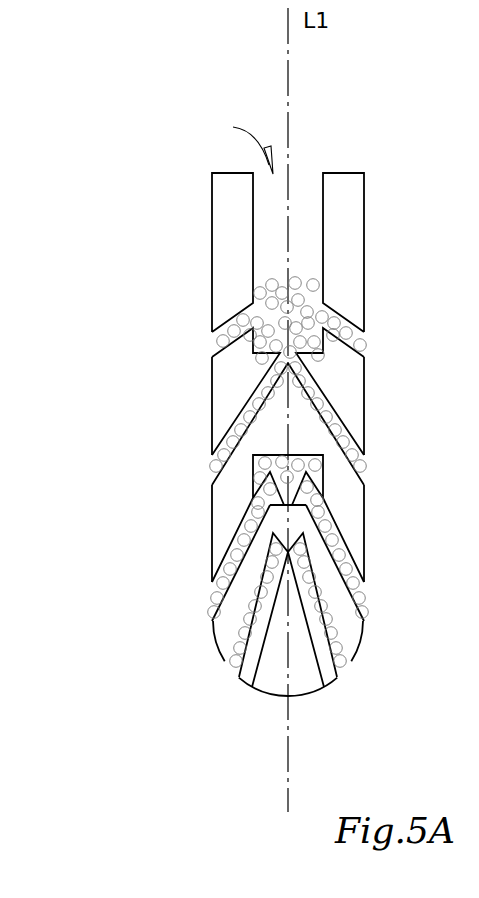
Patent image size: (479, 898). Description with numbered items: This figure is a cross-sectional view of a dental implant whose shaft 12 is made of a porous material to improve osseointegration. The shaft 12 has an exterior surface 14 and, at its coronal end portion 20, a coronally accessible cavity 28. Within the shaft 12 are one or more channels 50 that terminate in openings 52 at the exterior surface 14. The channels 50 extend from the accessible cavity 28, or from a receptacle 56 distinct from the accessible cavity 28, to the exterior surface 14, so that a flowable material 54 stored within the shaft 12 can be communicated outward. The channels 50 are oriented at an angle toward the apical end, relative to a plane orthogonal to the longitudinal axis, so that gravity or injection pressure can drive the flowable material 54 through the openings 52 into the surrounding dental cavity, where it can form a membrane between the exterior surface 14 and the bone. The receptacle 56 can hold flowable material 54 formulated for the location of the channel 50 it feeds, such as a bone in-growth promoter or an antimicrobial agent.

The shaft 12 is at (110, 127).
The exterior surface 14 is at (210, 253).
The coronal end portion 20 is at (353, 225).
The accessible cavity 28 is at (235, 143).
The channel 50 is at (226, 327).
The opening 52 is at (343, 173).
The flowable material 54 is at (306, 298).
The receptacle 56 is at (253, 489).